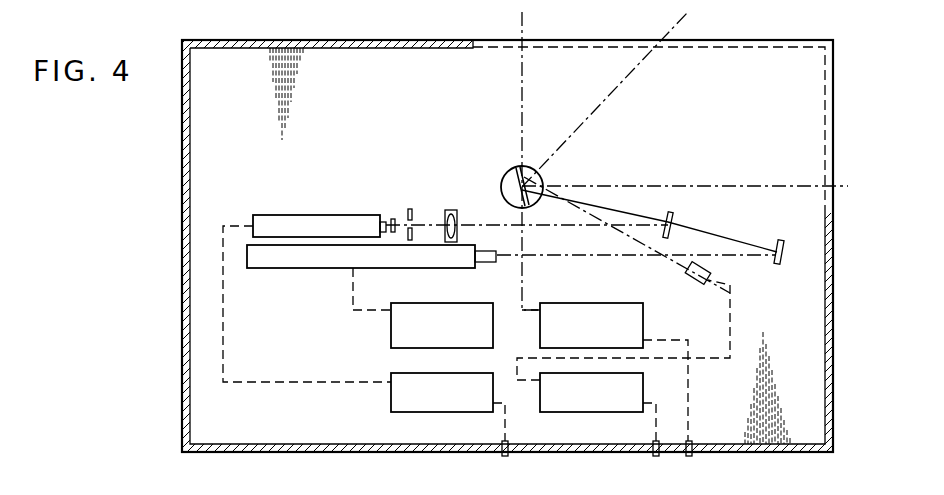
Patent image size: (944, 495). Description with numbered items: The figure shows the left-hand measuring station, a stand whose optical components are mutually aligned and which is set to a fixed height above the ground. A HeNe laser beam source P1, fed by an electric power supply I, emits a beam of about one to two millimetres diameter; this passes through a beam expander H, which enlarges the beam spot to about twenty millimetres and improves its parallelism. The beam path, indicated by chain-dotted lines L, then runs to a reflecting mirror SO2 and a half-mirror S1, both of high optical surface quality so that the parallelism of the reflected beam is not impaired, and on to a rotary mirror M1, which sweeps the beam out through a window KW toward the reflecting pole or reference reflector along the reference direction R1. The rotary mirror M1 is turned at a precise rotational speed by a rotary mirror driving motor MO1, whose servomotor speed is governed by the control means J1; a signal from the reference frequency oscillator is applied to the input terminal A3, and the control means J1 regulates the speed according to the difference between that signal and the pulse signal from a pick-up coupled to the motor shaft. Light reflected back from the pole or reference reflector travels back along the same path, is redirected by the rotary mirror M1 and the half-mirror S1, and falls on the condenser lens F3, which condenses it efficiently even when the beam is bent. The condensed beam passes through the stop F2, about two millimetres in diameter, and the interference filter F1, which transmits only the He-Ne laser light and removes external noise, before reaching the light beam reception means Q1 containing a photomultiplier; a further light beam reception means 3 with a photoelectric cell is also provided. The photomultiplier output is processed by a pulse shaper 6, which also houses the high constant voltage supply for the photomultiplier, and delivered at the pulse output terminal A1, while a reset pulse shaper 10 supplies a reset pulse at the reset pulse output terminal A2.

The window KW is at (834, 58).
The reference axis line R1 is at (694, 172).
The light beam reception means with photomultiplier Q1 is at (316, 215).
The light beam L is at (581, 256).
The rotary mirror driving motor MO1 is at (502, 186).
The rotary mirror M1 is at (526, 170).
The interference filter F1 is at (392, 218).
The stop F2 is at (411, 209).
The condenser lens F3 is at (450, 210).
The laser beam source P1 is at (302, 258).
The beam expander H is at (483, 264).
The half-mirror S1 is at (673, 216).
The reflecting mirror SO2 is at (777, 266).
The light beam reception means with photoelectric cell 3 is at (697, 281).
The electric power supply I is at (392, 322).
The pulse shaper 6 is at (392, 388).
The means for controlling the speed of a servomotor J1 is at (609, 316).
The reset pulse shaper 10 is at (643, 378).
The pulse output terminal A1 is at (504, 457).
The reset pulse output terminal A2 is at (656, 457).
The input terminal A3 is at (689, 457).